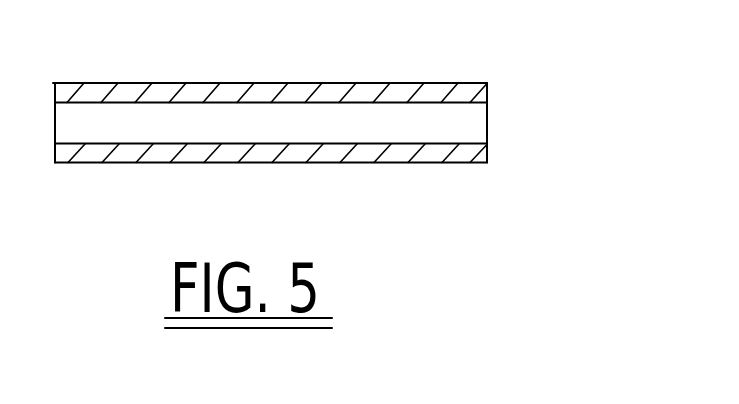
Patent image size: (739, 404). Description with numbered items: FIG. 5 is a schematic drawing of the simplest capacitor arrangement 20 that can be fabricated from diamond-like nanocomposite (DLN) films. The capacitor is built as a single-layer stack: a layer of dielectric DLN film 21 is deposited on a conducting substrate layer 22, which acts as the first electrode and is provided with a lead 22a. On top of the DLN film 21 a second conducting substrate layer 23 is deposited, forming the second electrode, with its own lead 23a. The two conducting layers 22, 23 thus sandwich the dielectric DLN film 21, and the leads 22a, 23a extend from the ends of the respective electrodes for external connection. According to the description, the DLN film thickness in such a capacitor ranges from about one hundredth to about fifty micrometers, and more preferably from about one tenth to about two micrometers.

The laminated sheet 20 is at (396, 48).
The dielectric DLN film 21 is at (100, 122).
The conducting substrate layer 22 is at (265, 152).
The lead 22a is at (483, 152).
The second conducting substrate layer 23 is at (233, 90).
The lead 23a is at (483, 90).